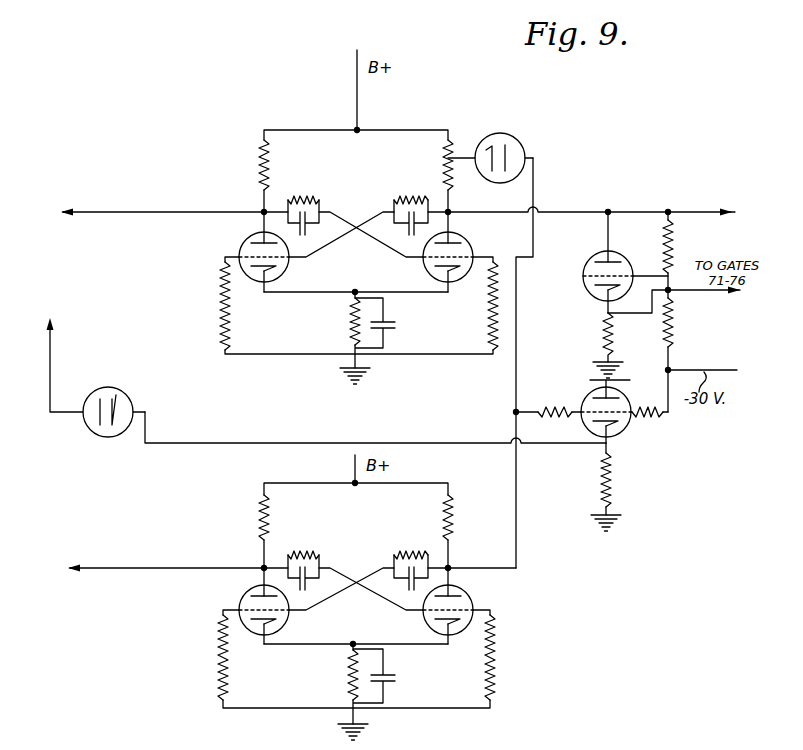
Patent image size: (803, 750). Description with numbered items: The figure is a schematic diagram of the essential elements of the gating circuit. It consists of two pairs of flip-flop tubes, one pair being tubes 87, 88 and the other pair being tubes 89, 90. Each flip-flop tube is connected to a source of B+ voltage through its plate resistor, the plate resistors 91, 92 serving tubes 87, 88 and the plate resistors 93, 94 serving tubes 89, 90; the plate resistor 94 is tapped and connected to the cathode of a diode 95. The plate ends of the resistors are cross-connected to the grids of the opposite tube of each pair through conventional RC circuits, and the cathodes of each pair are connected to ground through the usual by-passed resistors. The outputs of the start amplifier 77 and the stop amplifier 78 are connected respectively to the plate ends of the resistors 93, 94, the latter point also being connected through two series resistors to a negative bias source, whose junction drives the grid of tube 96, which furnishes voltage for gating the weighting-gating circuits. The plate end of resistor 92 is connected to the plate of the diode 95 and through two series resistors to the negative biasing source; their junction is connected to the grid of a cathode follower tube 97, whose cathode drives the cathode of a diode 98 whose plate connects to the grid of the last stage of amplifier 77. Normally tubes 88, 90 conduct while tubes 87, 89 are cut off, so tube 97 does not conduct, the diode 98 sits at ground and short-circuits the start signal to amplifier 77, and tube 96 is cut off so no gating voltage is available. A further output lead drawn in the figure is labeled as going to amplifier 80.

The flip-flop tube 87 is at (243, 603).
The flip-flop tube 88 is at (473, 599).
The flip-flop tube 89 is at (242, 248).
The flip-flop tube 90 is at (468, 246).
The plate resistor 91 is at (250, 517).
The plate resistor 92 is at (432, 517).
The plate resistor 93 is at (270, 168).
The plate resistor 94 is at (444, 164).
The diode 95 is at (521, 146).
The tube 96 is at (591, 259).
The cathode follower tube 97 is at (588, 397).
The diode 98 is at (100, 437).
The start amplifier 77 is at (116, 291).
The stop amplifier 78 is at (712, 195).
The amplifier 80 is at (114, 546).